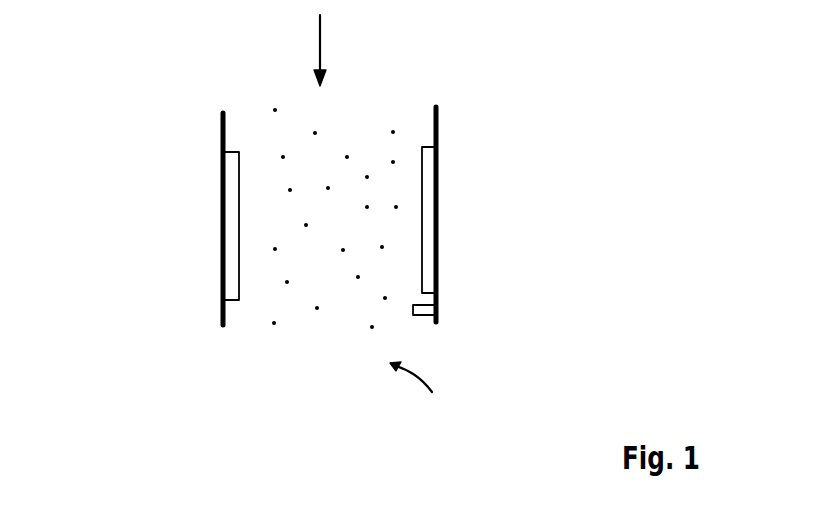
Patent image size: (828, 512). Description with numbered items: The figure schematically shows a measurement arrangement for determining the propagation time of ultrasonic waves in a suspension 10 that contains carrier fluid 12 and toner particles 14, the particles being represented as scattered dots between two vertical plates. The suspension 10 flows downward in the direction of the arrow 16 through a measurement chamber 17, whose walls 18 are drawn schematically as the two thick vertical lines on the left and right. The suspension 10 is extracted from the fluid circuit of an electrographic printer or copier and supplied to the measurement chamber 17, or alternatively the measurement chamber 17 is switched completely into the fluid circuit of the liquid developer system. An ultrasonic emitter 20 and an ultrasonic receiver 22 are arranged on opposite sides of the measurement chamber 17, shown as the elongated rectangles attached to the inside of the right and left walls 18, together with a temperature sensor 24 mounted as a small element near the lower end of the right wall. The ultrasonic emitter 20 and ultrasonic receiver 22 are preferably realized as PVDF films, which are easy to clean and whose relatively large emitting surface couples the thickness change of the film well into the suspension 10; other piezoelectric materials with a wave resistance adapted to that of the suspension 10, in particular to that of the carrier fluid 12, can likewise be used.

The suspension 10 is at (342, 225).
The carrier fluid 12 is at (284, 133).
The toner particles 14 is at (373, 100).
The arrow 16 is at (322, 33).
The measurement chamber 17 is at (427, 387).
The walls 18 is at (222, 127).
The ultrasonic emitter 20 is at (427, 205).
The ultrasonic receiver 22 is at (235, 217).
The temperature sensor 24 is at (440, 298).